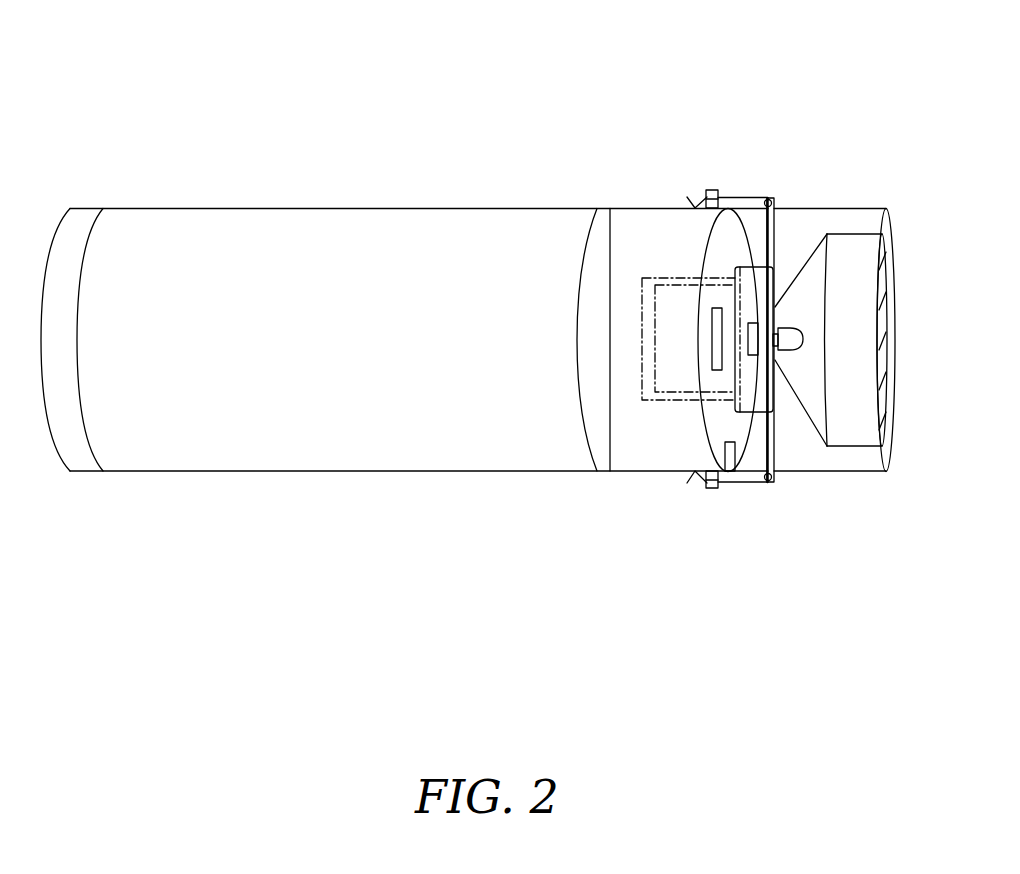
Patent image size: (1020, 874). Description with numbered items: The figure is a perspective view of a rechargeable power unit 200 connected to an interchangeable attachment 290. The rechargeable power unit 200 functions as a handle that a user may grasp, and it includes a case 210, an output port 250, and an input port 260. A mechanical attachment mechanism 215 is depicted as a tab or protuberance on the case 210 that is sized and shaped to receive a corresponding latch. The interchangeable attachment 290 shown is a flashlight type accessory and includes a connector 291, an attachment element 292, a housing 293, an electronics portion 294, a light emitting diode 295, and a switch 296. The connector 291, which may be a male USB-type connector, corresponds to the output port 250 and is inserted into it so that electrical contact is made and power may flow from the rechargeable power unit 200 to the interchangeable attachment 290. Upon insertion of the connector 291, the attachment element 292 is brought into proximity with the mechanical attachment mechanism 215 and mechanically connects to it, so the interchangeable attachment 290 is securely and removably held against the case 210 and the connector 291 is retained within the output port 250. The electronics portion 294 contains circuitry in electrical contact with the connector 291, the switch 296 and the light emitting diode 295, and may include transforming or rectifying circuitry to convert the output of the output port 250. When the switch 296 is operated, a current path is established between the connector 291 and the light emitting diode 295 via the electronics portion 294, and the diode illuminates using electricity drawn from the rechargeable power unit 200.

The rechargeable power unit 200 is at (465, 80).
The case 210 is at (450, 471).
The mechanical attachment mechanism 215 is at (711, 190).
The output port 250 is at (657, 278).
The input port 260 is at (717, 287).
The interchangeable attachment 290 is at (917, 183).
The connector 291 is at (657, 310).
The attachment element 292 is at (745, 482).
The housing 293 is at (873, 208).
The electronics portion 294 is at (765, 392).
The light emitting diode 295 is at (795, 335).
The switch 296 is at (752, 337).